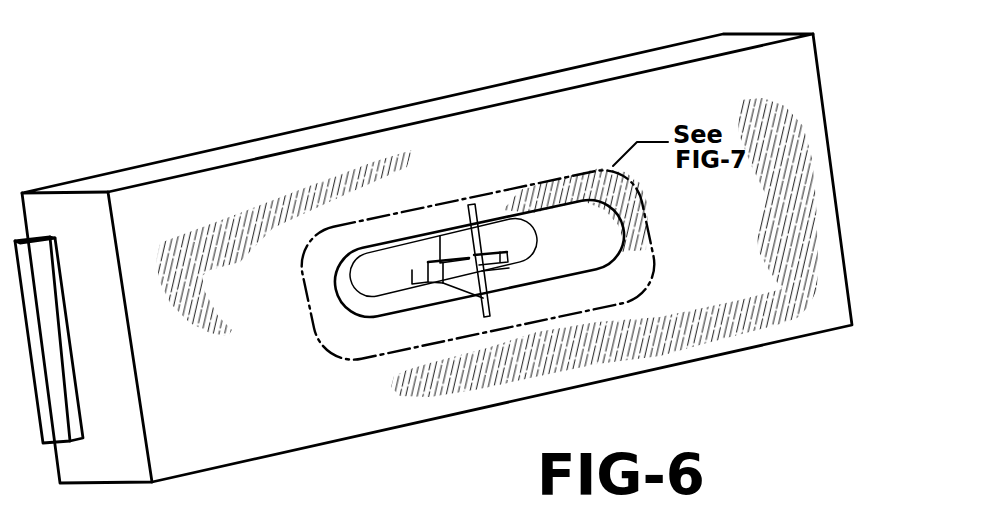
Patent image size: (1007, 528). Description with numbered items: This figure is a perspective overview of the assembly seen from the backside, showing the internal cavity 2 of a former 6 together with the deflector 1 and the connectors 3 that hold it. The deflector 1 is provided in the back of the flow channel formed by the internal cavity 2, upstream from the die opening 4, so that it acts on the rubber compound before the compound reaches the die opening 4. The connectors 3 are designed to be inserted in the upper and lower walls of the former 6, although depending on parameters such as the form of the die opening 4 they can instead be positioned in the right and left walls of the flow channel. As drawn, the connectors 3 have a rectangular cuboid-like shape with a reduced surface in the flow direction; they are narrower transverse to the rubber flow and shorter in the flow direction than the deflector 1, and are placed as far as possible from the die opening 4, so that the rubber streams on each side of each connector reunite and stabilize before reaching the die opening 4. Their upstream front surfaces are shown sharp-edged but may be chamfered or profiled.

The deflector 1 is at (443, 271).
The internal cavity 2 is at (597, 252).
The connector 3 is at (460, 238).
The die opening 4 is at (413, 270).
The former 6 is at (798, 65).